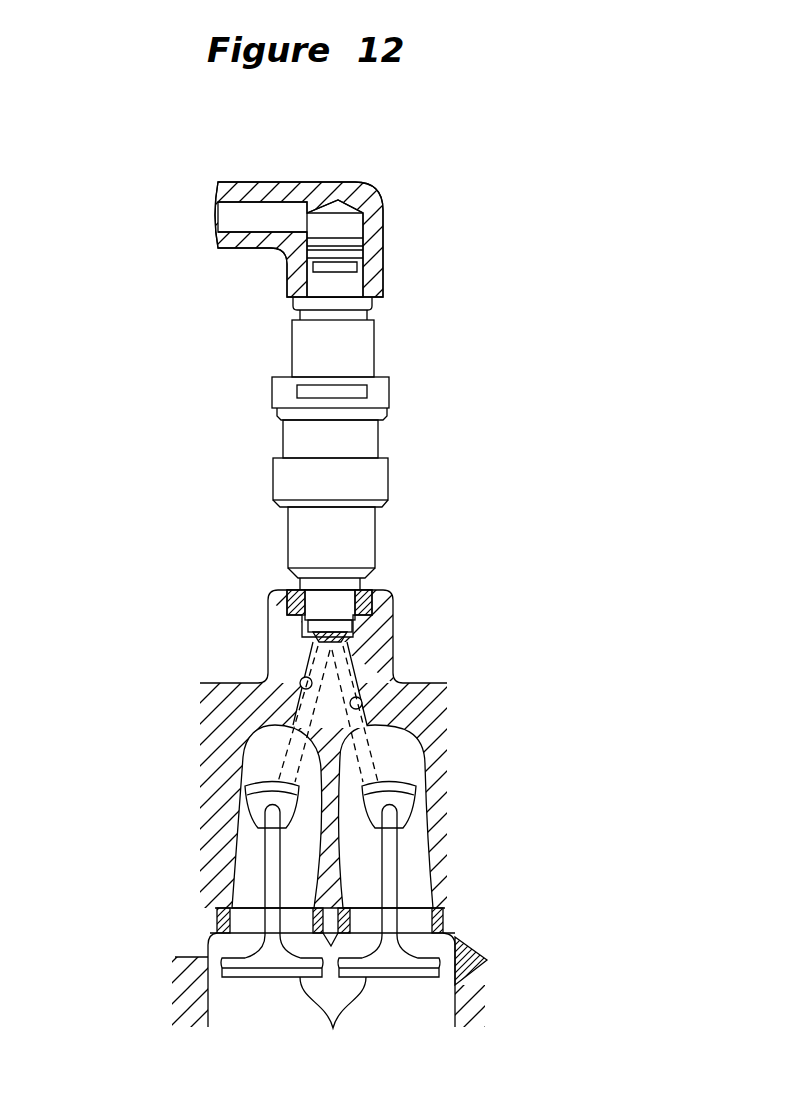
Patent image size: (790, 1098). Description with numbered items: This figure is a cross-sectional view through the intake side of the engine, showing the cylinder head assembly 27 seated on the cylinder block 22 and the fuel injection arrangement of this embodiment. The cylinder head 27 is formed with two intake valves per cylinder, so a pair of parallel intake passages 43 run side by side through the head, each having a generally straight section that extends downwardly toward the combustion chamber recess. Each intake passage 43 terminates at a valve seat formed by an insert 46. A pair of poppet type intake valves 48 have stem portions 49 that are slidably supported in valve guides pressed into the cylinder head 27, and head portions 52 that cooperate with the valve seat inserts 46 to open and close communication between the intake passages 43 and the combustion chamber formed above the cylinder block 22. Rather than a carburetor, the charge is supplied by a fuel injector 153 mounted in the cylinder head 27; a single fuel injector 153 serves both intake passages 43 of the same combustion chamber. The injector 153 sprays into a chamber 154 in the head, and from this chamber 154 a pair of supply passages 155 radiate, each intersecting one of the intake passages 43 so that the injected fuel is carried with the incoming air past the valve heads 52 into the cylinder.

The fuel injector 153 is at (383, 433).
The chamber 154 is at (357, 627).
The supply passages 155 is at (303, 681).
The intake passages 43 is at (270, 765).
The intake valves 48 is at (265, 840).
The stem portions 49 is at (258, 858).
The valve seat insert 46 is at (225, 915).
The cylinder head assembly 27 is at (503, 910).
The cylinder block 22 is at (508, 1012).
The head portions 52 is at (333, 1016).